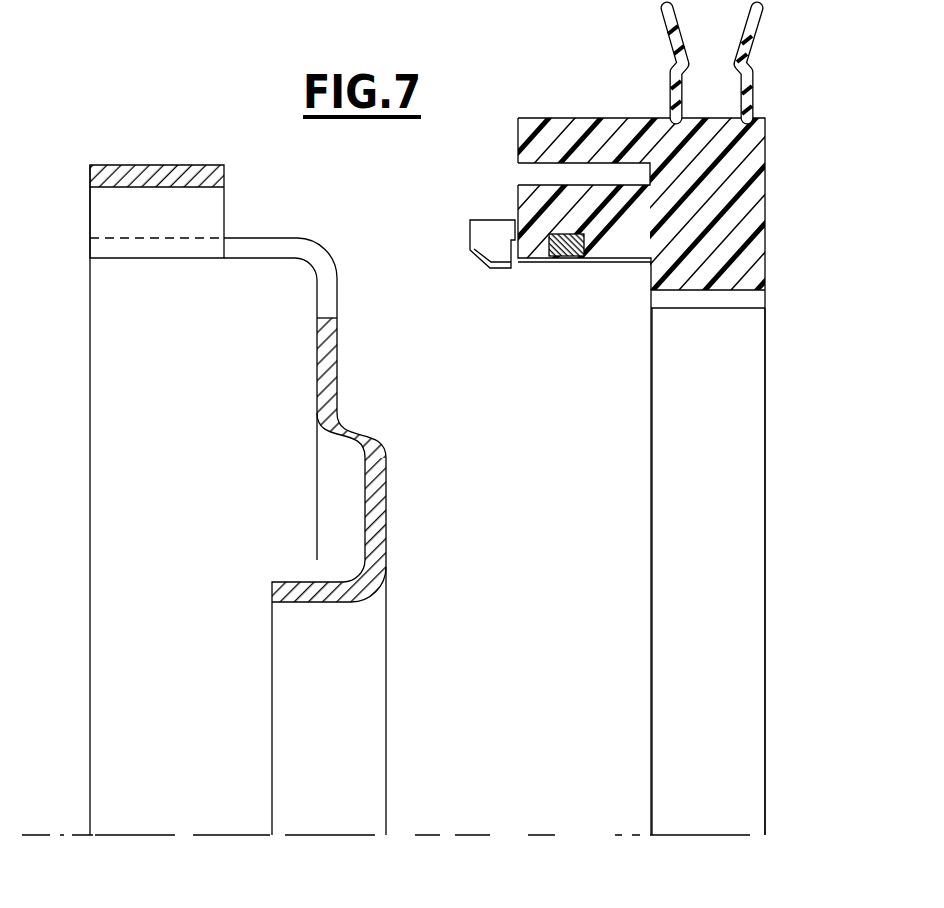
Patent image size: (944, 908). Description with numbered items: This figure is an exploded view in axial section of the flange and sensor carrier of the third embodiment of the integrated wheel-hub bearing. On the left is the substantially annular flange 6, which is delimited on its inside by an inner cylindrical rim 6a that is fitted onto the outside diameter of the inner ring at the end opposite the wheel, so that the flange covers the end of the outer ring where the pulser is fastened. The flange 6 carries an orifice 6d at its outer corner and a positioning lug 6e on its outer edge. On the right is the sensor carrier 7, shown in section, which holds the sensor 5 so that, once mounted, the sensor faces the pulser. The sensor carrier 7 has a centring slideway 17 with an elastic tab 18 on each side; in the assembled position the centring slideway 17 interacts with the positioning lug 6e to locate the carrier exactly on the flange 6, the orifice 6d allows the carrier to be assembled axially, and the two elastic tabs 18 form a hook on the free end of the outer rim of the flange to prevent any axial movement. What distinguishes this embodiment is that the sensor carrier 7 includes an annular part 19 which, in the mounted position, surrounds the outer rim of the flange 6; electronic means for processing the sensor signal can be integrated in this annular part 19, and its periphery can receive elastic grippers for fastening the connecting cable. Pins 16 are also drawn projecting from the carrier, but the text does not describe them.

The sensor 5 is at (567, 257).
The flange 6 is at (340, 375).
The inner cylindrical rim 6a is at (313, 590).
The orifice 6d is at (305, 252).
The positioning lug 6e is at (158, 178).
The sensor carrier 7 is at (768, 190).
The terminal pins 16 is at (757, 12).
The centring slideway 17 is at (557, 148).
The elastic tab 18 is at (497, 240).
The annular part 19 is at (735, 632).